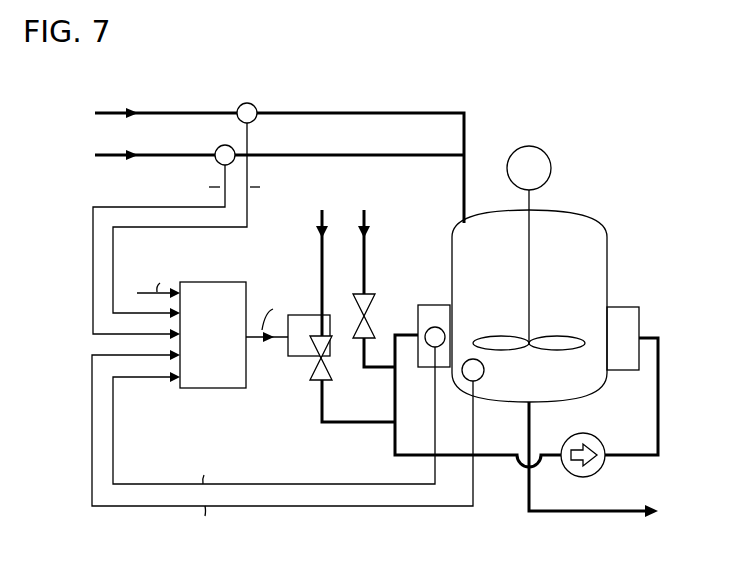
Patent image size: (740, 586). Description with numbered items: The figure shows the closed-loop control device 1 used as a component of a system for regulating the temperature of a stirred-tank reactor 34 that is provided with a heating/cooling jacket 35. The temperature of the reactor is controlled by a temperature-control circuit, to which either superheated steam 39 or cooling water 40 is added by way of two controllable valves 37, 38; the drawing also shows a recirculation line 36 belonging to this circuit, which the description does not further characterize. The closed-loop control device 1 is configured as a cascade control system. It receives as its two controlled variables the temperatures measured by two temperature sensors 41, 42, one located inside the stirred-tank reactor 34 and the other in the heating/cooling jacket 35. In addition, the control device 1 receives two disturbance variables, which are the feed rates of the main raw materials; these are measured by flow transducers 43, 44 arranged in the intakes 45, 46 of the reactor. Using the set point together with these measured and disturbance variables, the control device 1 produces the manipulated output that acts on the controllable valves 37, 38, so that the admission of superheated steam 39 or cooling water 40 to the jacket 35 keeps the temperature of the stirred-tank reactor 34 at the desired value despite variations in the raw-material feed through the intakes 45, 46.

The closed-loop control device 1 is at (211, 282).
The stirred-tank reactor 34 is at (608, 275).
The heating/cooling jacket 35 is at (640, 319).
The recirculation line 36 is at (660, 410).
The controllable valve 37 is at (305, 369).
The controllable valve 38 is at (380, 307).
The superheated steam 39 is at (316, 224).
The cooling water 40 is at (371, 222).
The temperature sensor 41 is at (485, 371).
The temperature sensor 42 is at (435, 327).
The flow transducer 43 is at (218, 146).
The flow transducer 44 is at (256, 104).
The intake 45 is at (106, 160).
The intake 46 is at (104, 110).